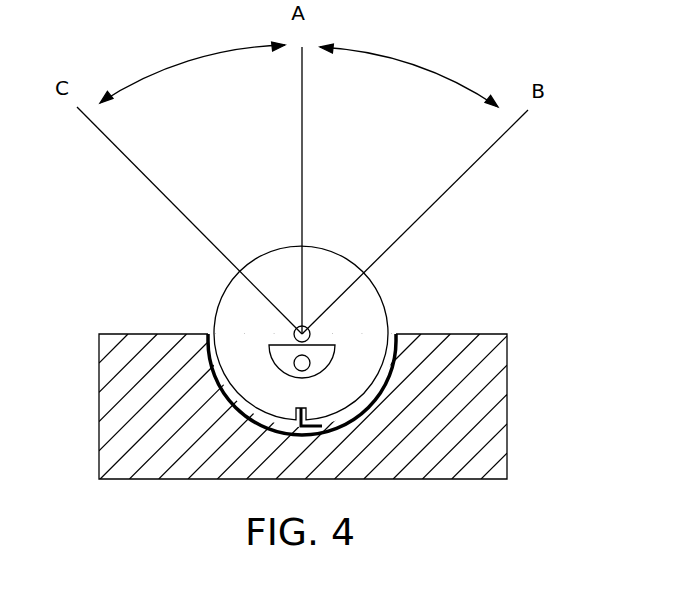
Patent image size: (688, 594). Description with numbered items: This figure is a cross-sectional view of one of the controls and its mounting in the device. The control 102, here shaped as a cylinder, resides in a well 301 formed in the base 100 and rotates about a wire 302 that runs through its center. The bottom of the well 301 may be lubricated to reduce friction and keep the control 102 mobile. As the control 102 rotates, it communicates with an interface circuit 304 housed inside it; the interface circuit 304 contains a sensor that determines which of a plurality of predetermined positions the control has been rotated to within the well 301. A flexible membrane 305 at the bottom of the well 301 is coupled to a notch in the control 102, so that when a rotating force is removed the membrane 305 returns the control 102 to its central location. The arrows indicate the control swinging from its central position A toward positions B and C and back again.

The base 100 is at (495, 392).
The control 102 is at (358, 312).
The well 301 is at (396, 338).
The wire 302 is at (295, 331).
The interface circuit 304 is at (283, 355).
The flexible membrane 305 is at (320, 426).